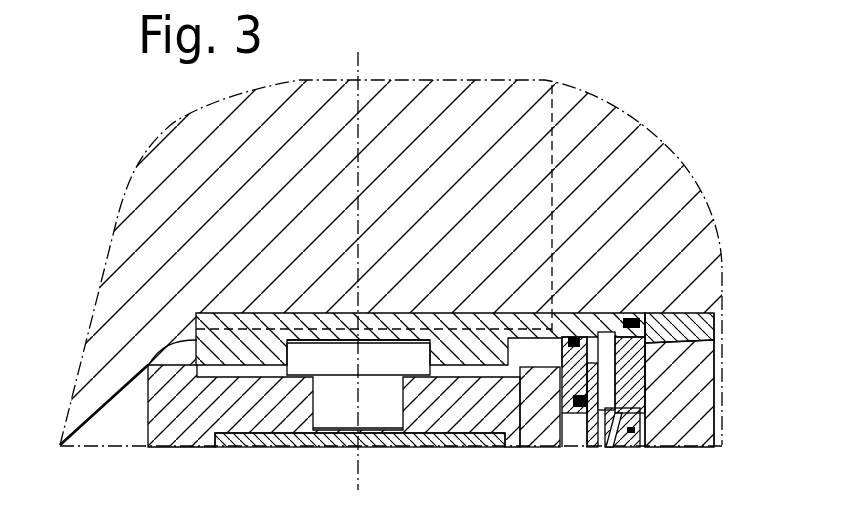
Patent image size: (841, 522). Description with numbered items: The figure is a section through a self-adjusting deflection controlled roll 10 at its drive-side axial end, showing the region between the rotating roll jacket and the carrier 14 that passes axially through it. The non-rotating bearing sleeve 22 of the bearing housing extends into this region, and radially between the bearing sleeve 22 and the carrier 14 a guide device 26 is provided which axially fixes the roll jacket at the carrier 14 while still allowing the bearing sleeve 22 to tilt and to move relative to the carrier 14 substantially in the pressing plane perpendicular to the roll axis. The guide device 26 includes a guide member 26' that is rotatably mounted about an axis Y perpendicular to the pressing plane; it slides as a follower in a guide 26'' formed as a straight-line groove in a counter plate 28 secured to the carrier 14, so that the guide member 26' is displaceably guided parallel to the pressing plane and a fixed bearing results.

The deflection controlled roll 10 is at (140, 142).
The carrier 14 is at (141, 223).
The bearing sleeve 22 is at (246, 405).
The guide device 26 is at (114, 392).
The guide member 26' is at (392, 418).
The guide 26'' is at (358, 296).
The counter plate 28 is at (415, 326).
The axis Y is at (363, 462).